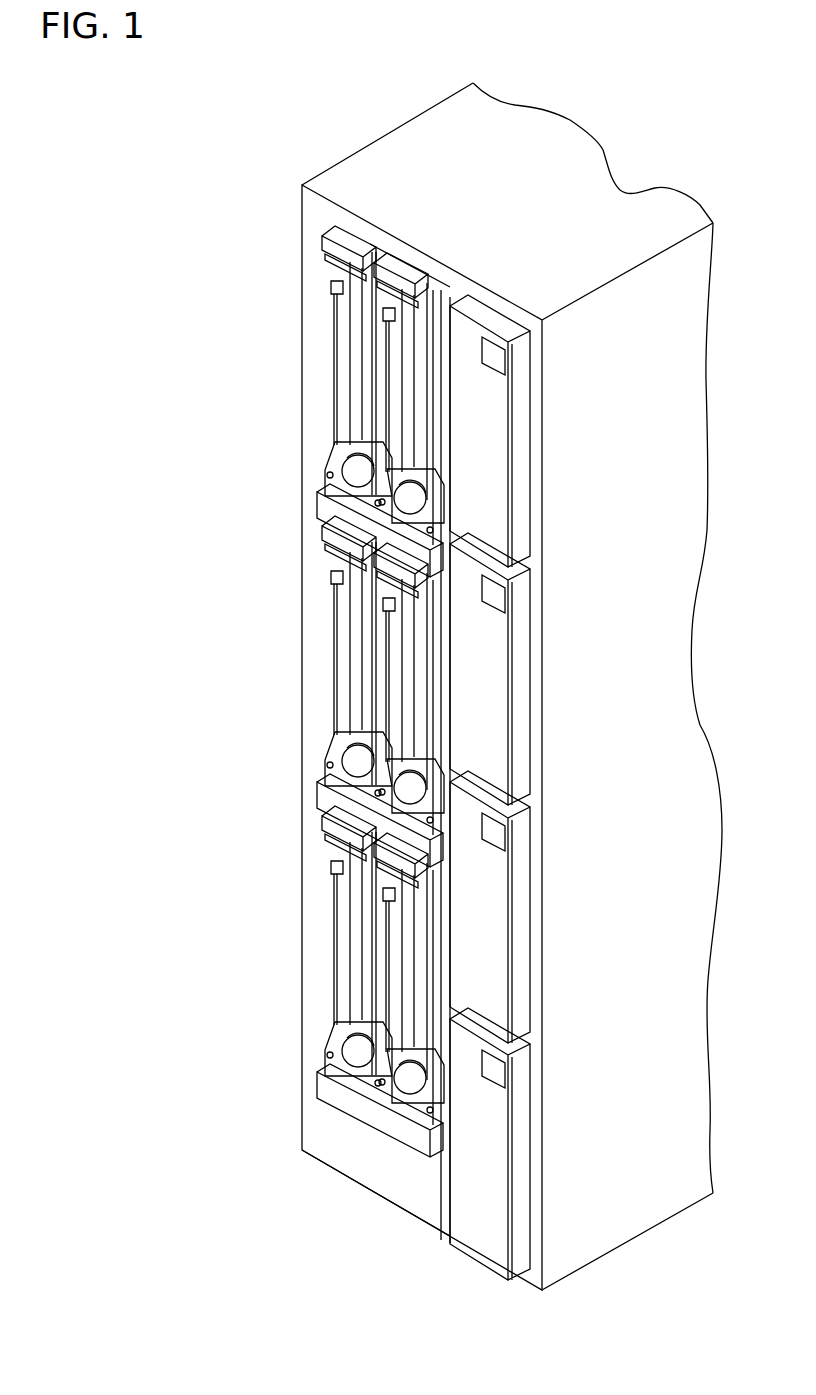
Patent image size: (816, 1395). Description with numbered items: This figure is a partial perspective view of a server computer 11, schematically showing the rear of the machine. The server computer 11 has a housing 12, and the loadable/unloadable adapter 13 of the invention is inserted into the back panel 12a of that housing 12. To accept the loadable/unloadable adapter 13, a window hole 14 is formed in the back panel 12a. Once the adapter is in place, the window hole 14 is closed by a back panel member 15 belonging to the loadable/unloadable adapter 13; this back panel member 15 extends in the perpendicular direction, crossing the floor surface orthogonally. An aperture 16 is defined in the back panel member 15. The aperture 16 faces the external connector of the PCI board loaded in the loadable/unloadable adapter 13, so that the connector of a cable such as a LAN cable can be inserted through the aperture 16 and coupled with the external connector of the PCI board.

The server computer 11 is at (473, 677).
The housing 12 is at (302, 1114).
The back panel 12a is at (378, 1167).
The loadable/unloadable adapter 13 is at (334, 681).
The window hole 14 is at (372, 243).
The back panel member 15 is at (345, 335).
The aperture 16 is at (365, 299).